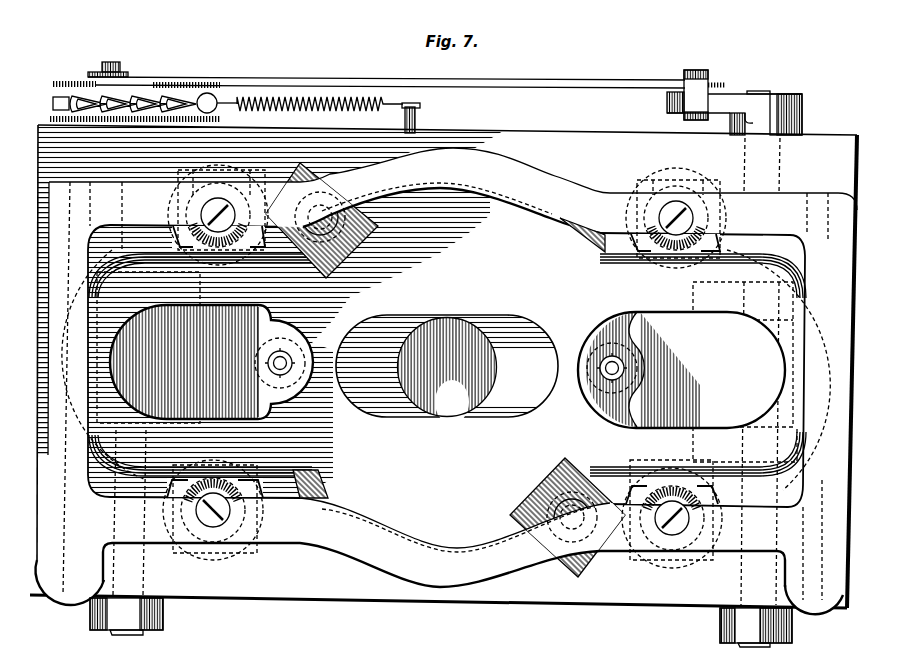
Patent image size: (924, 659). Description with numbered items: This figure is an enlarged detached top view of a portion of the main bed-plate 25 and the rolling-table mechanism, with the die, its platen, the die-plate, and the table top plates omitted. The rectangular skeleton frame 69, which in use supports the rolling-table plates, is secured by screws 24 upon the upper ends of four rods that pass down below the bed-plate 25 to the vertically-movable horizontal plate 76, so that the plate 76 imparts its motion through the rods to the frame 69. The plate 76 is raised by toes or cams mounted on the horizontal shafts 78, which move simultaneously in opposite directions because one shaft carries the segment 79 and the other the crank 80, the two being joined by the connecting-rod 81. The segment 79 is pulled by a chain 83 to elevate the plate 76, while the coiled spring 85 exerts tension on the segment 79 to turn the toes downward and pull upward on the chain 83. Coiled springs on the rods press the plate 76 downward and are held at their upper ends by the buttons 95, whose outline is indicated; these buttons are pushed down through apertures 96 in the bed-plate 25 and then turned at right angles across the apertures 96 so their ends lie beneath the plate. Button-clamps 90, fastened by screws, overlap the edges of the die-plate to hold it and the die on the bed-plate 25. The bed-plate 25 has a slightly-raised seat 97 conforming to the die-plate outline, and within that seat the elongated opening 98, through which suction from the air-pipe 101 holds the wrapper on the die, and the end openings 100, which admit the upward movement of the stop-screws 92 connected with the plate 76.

The screws 24 is at (689, 523).
The bed-plate 25 is at (443, 369).
The skeleton frame 69 is at (453, 367).
The horizontal plate 76 is at (447, 364).
The horizontal shafts 78 is at (129, 636).
The segment 79 is at (206, 92).
The crank 80 is at (667, 106).
The connecting-rod 81 is at (586, 80).
The chain 83 is at (57, 97).
The coiled spring 85 is at (276, 95).
The button-clamps 90 is at (426, 371).
The stop-screws 92 is at (675, 353).
The buttons 95 is at (632, 578).
The apertures 96 is at (262, 490).
The raised seat 97 is at (447, 356).
The elongated opening 98 is at (505, 316).
The end openings 100 is at (608, 307).
The air-pipe 101 is at (463, 370).